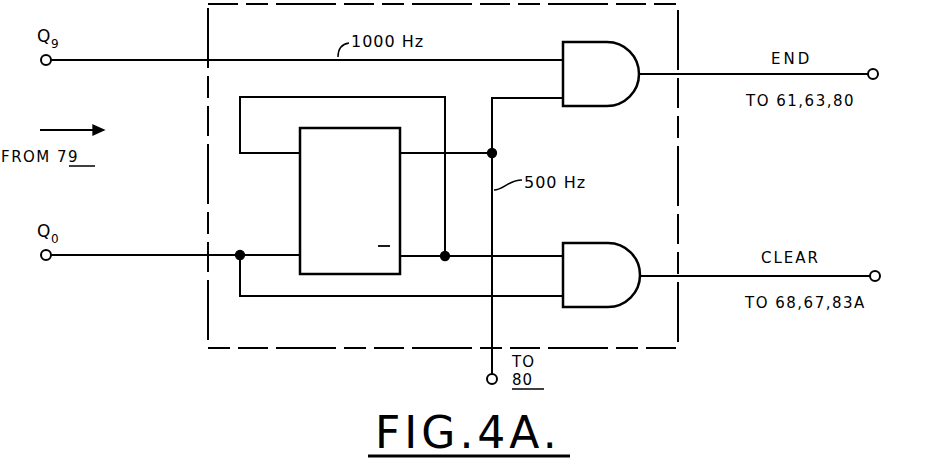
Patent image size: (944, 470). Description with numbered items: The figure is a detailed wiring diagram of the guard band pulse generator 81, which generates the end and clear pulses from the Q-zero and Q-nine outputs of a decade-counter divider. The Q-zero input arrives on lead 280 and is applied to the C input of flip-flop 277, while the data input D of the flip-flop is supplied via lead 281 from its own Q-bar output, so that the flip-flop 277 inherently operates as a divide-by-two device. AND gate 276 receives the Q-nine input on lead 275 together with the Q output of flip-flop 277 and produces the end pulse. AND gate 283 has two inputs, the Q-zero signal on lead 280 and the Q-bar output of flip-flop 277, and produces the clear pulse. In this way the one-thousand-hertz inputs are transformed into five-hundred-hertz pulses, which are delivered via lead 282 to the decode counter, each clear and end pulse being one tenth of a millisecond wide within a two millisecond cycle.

The guard band pulse generator 81 is at (680, 36).
The lead 275 is at (142, 59).
The AND gate 276 is at (605, 42).
The flip-flop 277 is at (300, 203).
The lead 280 is at (144, 257).
The lead 281 is at (448, 104).
The lead 282 is at (486, 378).
The AND gate 283 is at (606, 243).